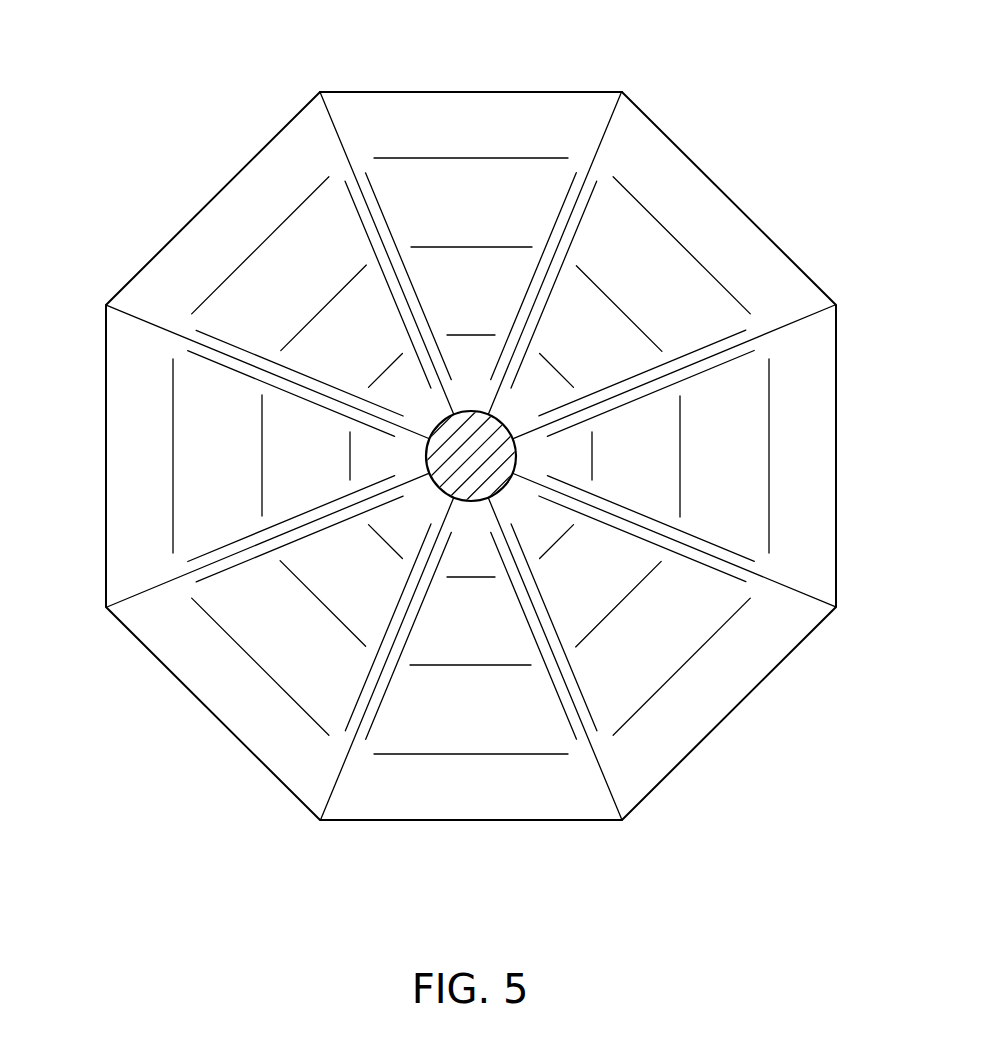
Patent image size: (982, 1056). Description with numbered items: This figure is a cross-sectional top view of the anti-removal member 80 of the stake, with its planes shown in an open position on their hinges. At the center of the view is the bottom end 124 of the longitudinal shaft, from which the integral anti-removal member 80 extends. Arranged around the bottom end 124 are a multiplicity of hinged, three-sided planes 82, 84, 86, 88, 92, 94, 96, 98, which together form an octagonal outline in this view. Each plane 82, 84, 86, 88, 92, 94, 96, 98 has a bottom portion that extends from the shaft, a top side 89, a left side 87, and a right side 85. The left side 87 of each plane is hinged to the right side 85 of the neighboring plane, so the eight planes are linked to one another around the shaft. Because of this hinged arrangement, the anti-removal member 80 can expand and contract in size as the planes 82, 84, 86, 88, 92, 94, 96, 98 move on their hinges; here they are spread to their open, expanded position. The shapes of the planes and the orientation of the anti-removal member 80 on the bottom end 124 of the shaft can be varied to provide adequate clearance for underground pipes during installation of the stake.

The anti-removal member 80 is at (802, 86).
The hinged three-sided plane 82 is at (467, 807).
The hinged three-sided plane 84 is at (240, 715).
The right side 85 is at (330, 112).
The hinged three-sided plane 86 is at (123, 450).
The left side 87 is at (636, 108).
The hinged three-sided plane 88 is at (222, 208).
The top side 89 is at (565, 93).
The hinged three-sided plane 92 is at (493, 107).
The hinged three-sided plane 94 is at (720, 212).
The hinged three-sided plane 96 is at (828, 462).
The hinged three-sided plane 98 is at (703, 723).
The bottom end 124 is at (454, 468).